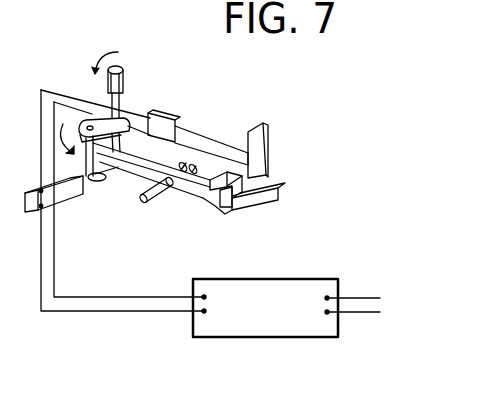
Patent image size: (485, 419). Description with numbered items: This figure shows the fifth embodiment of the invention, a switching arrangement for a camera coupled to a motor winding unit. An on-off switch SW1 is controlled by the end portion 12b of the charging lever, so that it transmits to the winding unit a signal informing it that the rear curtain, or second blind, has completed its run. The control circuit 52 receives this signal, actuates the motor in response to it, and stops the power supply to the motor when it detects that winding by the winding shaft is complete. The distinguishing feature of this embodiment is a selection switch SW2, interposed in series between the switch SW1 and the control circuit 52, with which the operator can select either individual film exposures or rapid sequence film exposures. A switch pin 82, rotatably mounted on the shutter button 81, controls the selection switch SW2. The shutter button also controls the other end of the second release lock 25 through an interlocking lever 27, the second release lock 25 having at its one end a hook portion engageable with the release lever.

The shutter button 81 is at (123, 82).
The on-off switch SW1 is at (210, 137).
The end portion of the charging lever 12b is at (266, 136).
The switch pin 82 is at (88, 181).
The selection switch SW2 is at (63, 196).
The interlocking lever 27 is at (177, 190).
The second release lock 25 is at (262, 196).
The control circuit 52 is at (257, 337).